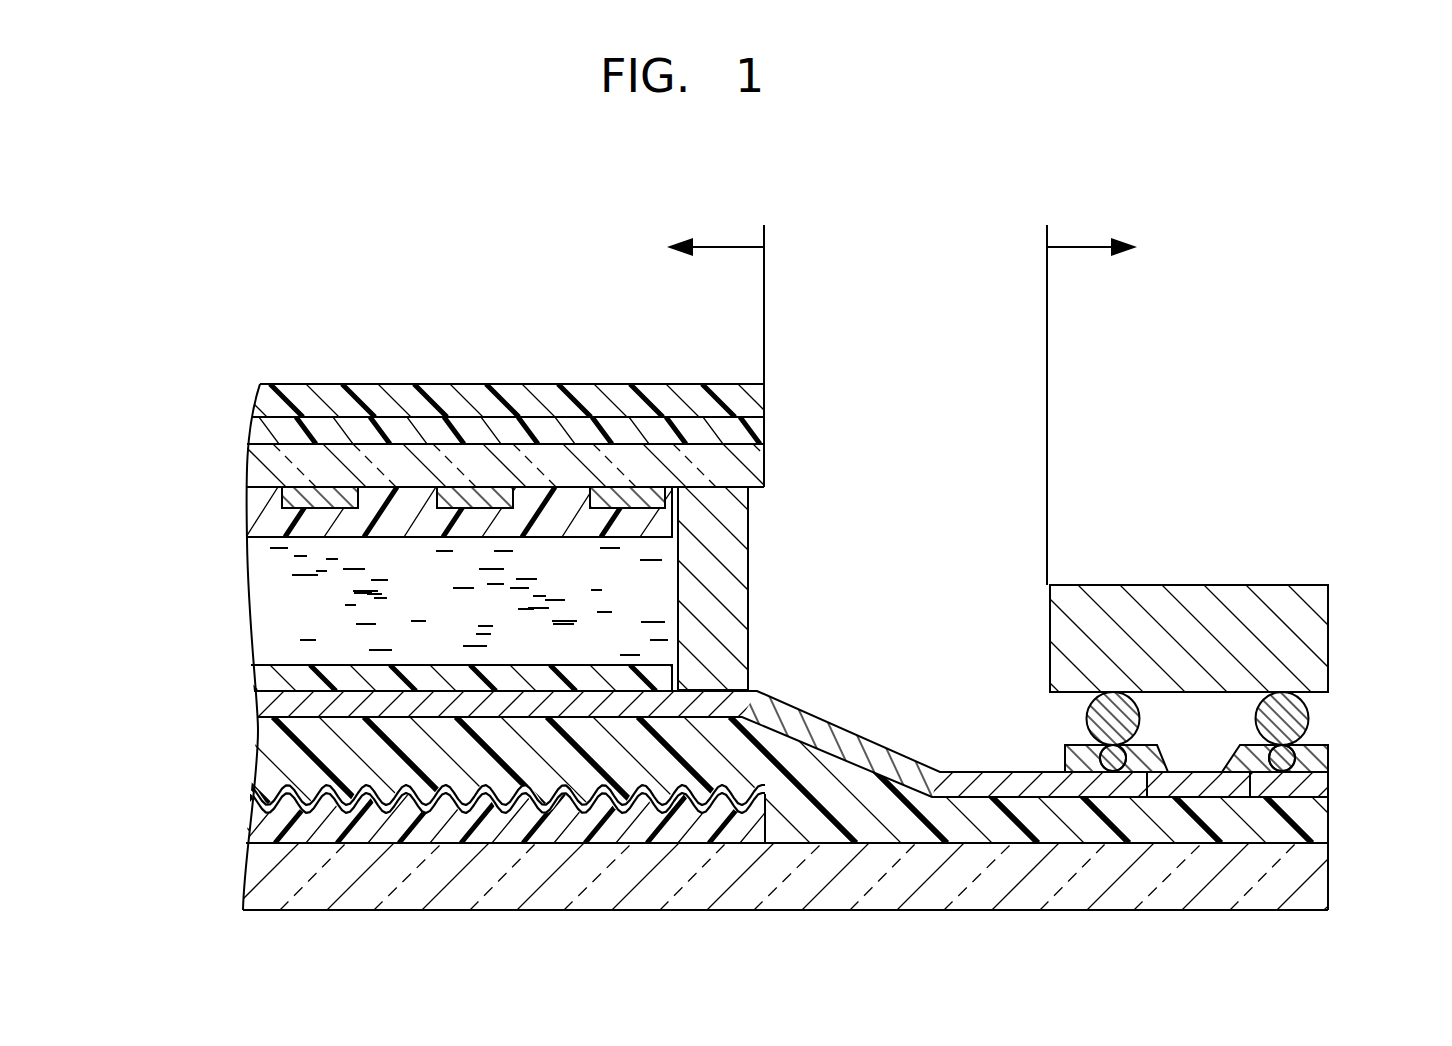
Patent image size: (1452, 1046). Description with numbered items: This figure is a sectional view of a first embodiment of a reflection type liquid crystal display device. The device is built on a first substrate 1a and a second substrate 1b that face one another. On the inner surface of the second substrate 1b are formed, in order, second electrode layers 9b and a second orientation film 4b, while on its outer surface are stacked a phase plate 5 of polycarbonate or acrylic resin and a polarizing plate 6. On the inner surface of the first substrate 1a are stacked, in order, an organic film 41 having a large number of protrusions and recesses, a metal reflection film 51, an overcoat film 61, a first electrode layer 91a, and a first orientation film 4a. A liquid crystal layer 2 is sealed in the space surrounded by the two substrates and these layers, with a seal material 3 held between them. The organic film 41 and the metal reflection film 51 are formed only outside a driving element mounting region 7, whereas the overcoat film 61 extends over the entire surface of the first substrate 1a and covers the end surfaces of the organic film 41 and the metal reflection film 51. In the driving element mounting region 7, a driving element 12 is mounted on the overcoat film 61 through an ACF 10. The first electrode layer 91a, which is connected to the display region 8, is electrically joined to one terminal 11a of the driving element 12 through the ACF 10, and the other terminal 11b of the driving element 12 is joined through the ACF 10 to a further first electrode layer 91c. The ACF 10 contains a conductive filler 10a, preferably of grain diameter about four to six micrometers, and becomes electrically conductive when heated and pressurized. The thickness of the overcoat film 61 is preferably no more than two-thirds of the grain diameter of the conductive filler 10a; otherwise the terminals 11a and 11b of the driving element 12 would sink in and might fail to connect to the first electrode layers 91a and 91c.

The first substrate 1a is at (280, 880).
The second substrate 1b is at (275, 470).
The liquid crystal layer 2 is at (290, 598).
The seal material 3 is at (722, 590).
The first orientation film 4a is at (270, 680).
The second orientation film 4b is at (270, 515).
The phase plate 5 is at (268, 432).
The polarizer 6 is at (268, 400).
The driving element mounting region 7 is at (1084, 247).
The display region 8 is at (720, 247).
The second electrode layers 9b is at (330, 498).
The ACF 10 is at (1318, 765).
The conductive filler 10a is at (1090, 762).
The terminal 11a is at (1098, 715).
The terminal 11b is at (1296, 713).
The driving element 12 is at (1207, 556).
The organic film 41 is at (270, 830).
The metal reflection film 51 is at (270, 800).
The overcoat film 61 is at (305, 760).
The first electrode layer 91a is at (280, 705).
The first electrode layer 91c is at (1300, 785).